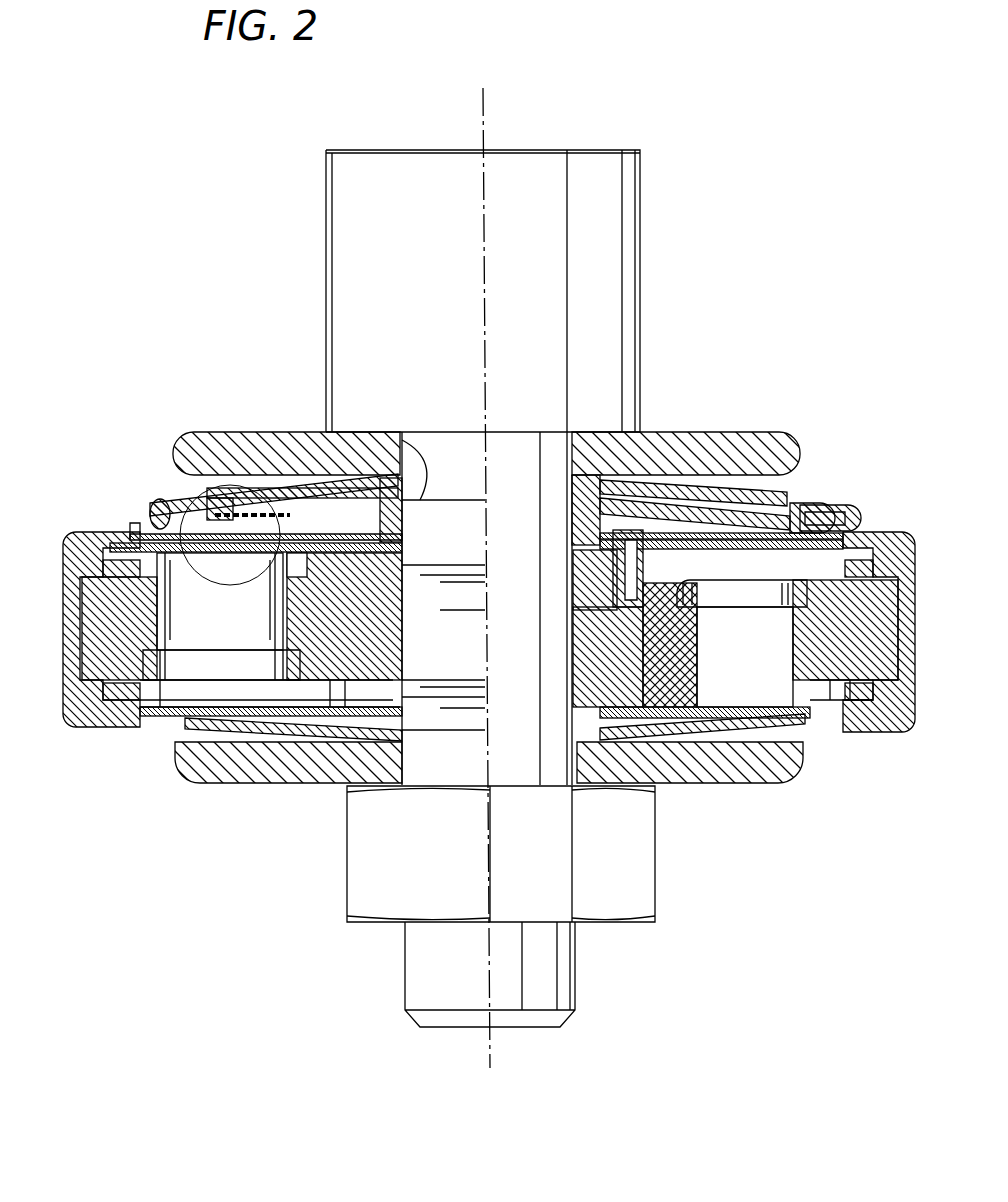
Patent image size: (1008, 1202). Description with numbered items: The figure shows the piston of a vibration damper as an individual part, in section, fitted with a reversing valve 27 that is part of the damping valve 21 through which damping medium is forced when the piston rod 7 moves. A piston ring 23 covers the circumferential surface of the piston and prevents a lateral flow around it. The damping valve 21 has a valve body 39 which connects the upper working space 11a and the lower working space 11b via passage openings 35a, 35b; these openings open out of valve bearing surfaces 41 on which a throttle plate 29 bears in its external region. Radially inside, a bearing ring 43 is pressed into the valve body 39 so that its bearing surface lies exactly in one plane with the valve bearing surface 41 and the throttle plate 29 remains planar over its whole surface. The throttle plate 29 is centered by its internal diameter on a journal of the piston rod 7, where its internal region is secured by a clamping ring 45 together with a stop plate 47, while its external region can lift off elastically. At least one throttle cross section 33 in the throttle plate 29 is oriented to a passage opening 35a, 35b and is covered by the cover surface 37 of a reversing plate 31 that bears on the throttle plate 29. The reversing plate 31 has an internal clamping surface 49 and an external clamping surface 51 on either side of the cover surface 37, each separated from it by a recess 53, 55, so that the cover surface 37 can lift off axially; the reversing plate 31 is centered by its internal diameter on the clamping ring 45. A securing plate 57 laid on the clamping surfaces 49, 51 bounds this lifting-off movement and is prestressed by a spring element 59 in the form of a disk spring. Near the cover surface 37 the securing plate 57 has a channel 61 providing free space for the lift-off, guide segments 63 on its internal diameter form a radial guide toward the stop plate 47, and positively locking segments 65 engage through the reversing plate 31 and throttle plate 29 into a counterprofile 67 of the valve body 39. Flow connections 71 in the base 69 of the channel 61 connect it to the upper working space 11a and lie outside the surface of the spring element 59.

The piston rod 7 is at (605, 213).
The upper working space 11a is at (290, 188).
The lower working space 11b is at (428, 1085).
The damping valve 21 is at (112, 533).
The piston ring 23 is at (880, 700).
The reversing valve 27 is at (167, 703).
The throttle plate 29 is at (848, 662).
The reversing plate 31 is at (805, 538).
The throttle cross section 33 is at (210, 555).
The passage opening 35a is at (243, 633).
The passage opening 35b is at (760, 687).
The cover surface 37 is at (213, 515).
The valve body 39 is at (858, 705).
The valve bearing surface 41 is at (300, 660).
The bearing ring 43 is at (395, 585).
The clamping ring 45 is at (410, 435).
The stop plate 47 is at (605, 450).
The internal clamping surface 49 is at (122, 528).
The external clamping surface 51 is at (323, 513).
The recess 53 is at (150, 513).
The recess 55 is at (282, 513).
The securing plate 57 is at (805, 520).
The spring element 59 is at (667, 487).
The channel 61 is at (813, 523).
The guide segment 63 is at (428, 435).
The positively locking segment 65 is at (643, 587).
The counterprofile 67 is at (662, 585).
The base 69 is at (737, 520).
The flow connection 71 is at (793, 503).